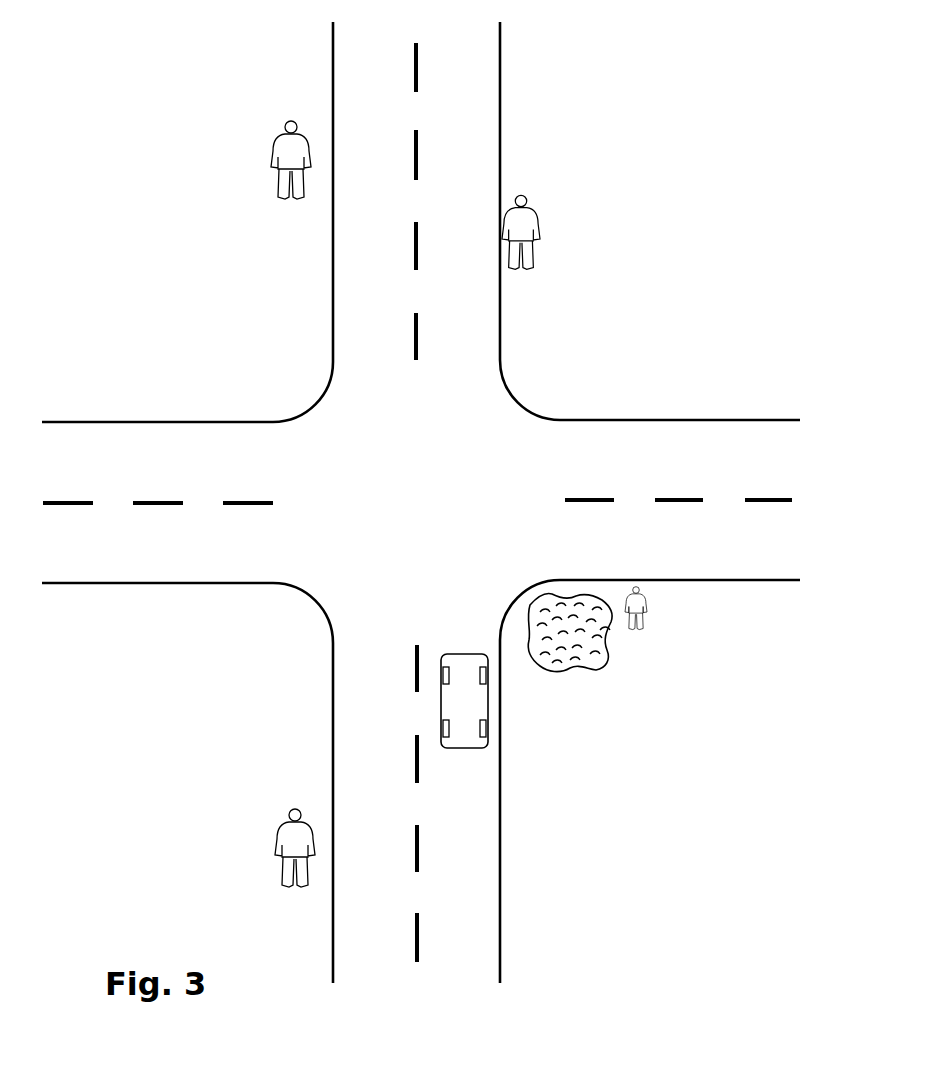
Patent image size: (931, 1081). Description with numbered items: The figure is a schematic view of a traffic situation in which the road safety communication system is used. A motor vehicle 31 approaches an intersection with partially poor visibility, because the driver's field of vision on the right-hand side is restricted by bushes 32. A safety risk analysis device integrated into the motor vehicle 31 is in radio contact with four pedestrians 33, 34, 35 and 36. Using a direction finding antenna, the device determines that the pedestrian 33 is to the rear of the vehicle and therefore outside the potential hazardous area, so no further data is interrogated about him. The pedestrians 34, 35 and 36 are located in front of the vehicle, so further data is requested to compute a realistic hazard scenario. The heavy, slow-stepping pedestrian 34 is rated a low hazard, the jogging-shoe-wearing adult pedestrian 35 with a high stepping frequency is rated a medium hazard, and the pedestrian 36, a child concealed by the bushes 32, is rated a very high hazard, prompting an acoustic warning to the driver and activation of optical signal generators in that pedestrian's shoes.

The motor vehicle 31 is at (465, 742).
The bushes 32 is at (582, 660).
The pedestrian 33 is at (280, 855).
The pedestrian 34 is at (272, 168).
The pedestrian 35 is at (540, 243).
The pedestrian 36 is at (645, 613).